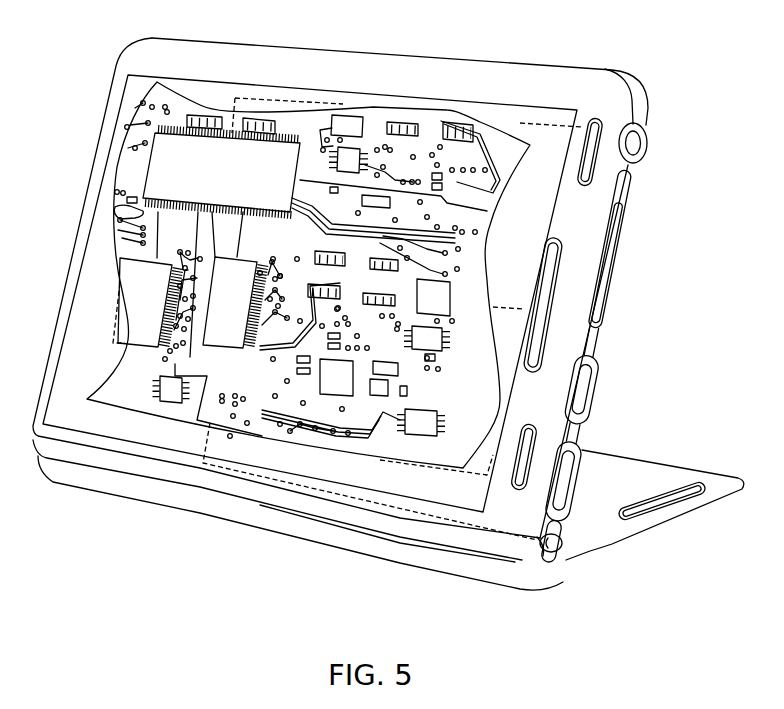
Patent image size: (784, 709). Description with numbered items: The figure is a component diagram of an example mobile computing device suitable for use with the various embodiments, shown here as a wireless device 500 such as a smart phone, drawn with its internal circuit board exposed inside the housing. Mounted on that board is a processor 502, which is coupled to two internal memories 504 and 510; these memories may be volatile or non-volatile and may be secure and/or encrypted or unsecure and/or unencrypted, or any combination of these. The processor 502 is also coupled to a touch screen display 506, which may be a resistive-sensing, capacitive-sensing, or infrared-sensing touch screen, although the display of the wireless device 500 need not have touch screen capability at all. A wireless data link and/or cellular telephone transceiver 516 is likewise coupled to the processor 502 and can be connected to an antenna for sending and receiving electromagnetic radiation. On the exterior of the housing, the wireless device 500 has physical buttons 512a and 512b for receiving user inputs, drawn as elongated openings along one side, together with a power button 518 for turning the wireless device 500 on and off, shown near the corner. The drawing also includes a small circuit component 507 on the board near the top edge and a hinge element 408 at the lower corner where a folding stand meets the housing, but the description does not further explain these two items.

The wireless device 500 is at (597, 67).
The processor 502 is at (236, 180).
The internal memory 504 is at (162, 285).
The touch screen display 506 is at (450, 100).
The circuit component 507 is at (350, 117).
The internal memory 510 is at (162, 388).
The physical button 512a is at (597, 160).
The physical button 512b is at (535, 443).
The cellular telephone transceiver 516 is at (250, 296).
The power button 518 is at (641, 138).
The hinge pin 408 is at (553, 552).